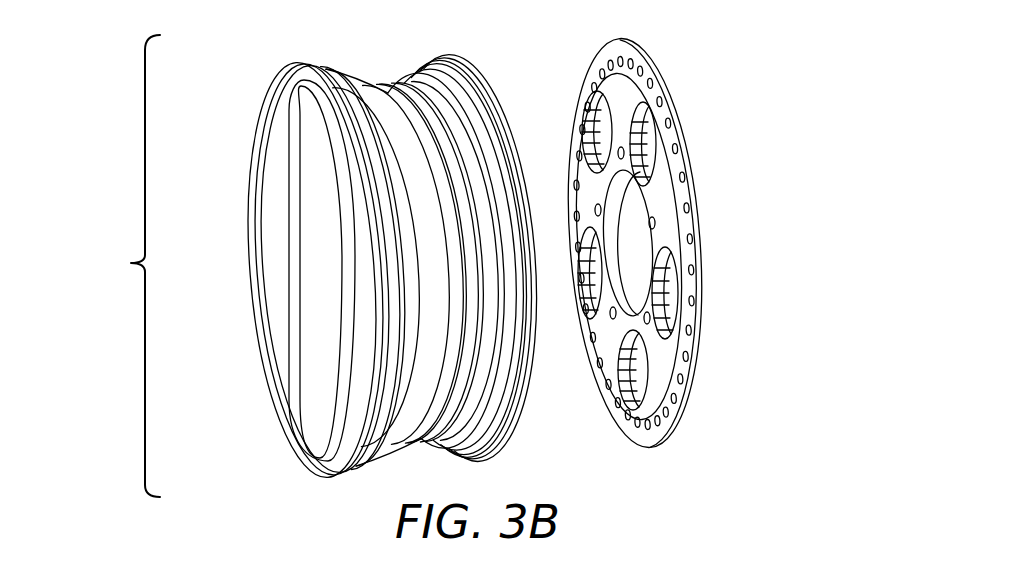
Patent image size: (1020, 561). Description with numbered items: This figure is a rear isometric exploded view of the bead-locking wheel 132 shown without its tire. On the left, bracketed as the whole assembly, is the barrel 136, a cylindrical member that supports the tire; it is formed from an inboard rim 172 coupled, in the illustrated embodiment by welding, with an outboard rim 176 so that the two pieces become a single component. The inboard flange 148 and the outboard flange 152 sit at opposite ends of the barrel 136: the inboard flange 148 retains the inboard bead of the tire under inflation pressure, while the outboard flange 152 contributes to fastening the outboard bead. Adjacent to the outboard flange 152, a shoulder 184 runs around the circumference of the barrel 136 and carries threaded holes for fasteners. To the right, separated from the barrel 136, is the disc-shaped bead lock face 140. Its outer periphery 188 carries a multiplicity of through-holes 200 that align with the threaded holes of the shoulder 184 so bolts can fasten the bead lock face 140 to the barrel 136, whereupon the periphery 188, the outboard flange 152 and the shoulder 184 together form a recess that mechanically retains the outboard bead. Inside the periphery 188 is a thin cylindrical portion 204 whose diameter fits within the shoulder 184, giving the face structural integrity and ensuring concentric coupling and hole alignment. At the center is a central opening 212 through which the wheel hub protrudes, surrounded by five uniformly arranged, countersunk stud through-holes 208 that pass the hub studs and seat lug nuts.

The bead-locking wheel 132 is at (123, 266).
The barrel 136 is at (226, 336).
The bead lock face 140 is at (728, 150).
The inboard flange 148 is at (260, 127).
The outboard flange 152 is at (503, 442).
The inboard rim 172 is at (307, 417).
The outboard rim 176 is at (392, 90).
The shoulder 184 is at (514, 160).
The periphery 188 is at (702, 337).
The through-holes 200 is at (598, 76).
The cylindrical portion 204 is at (615, 98).
The stud through-holes 208 is at (647, 320).
The central opening 212 is at (637, 208).